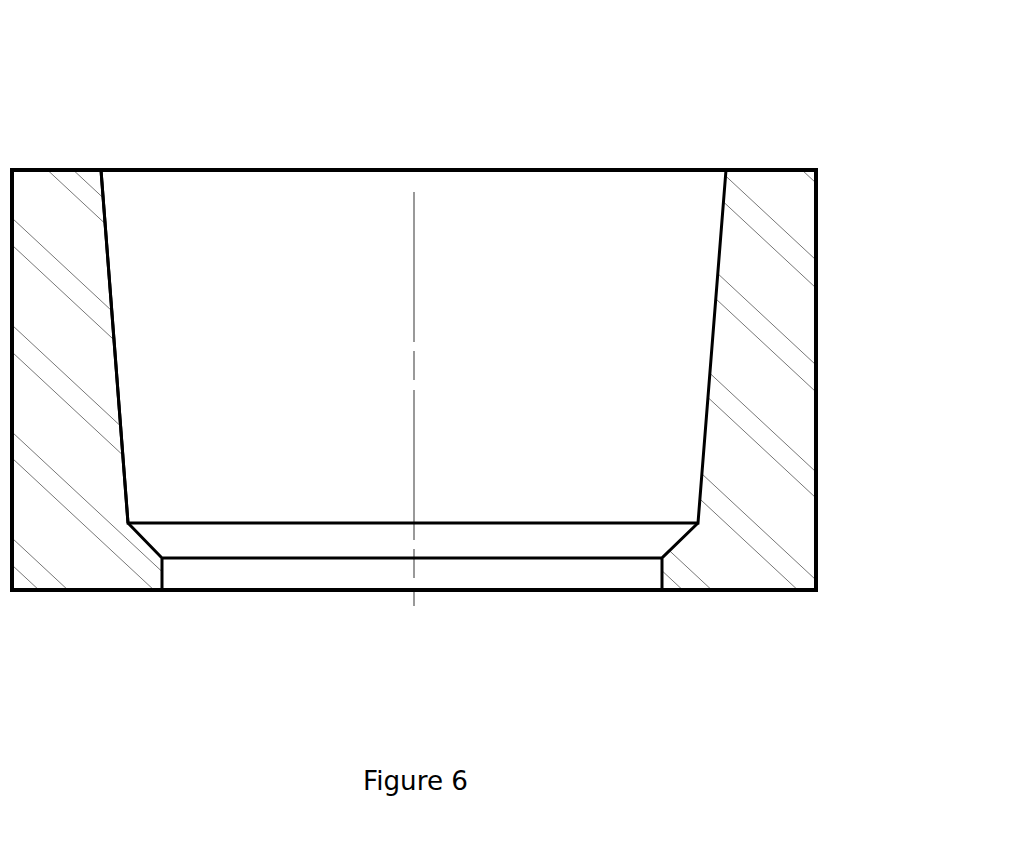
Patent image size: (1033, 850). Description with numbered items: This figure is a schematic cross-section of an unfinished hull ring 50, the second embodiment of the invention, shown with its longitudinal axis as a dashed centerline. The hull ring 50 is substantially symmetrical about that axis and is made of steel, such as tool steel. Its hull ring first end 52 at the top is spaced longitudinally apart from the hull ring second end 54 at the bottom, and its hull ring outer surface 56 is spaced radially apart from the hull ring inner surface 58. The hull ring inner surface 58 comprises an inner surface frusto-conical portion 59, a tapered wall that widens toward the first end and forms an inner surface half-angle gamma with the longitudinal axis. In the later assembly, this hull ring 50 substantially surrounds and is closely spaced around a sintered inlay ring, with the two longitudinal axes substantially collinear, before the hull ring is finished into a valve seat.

The hull ring 50 is at (64, 330).
The hull ring first end 52 is at (60, 168).
The hull ring second end 54 is at (87, 592).
The hull ring outer surface 56 is at (816, 349).
The hull ring inner surface 58 is at (178, 344).
The inner surface frusto-conical portion 59 is at (108, 256).